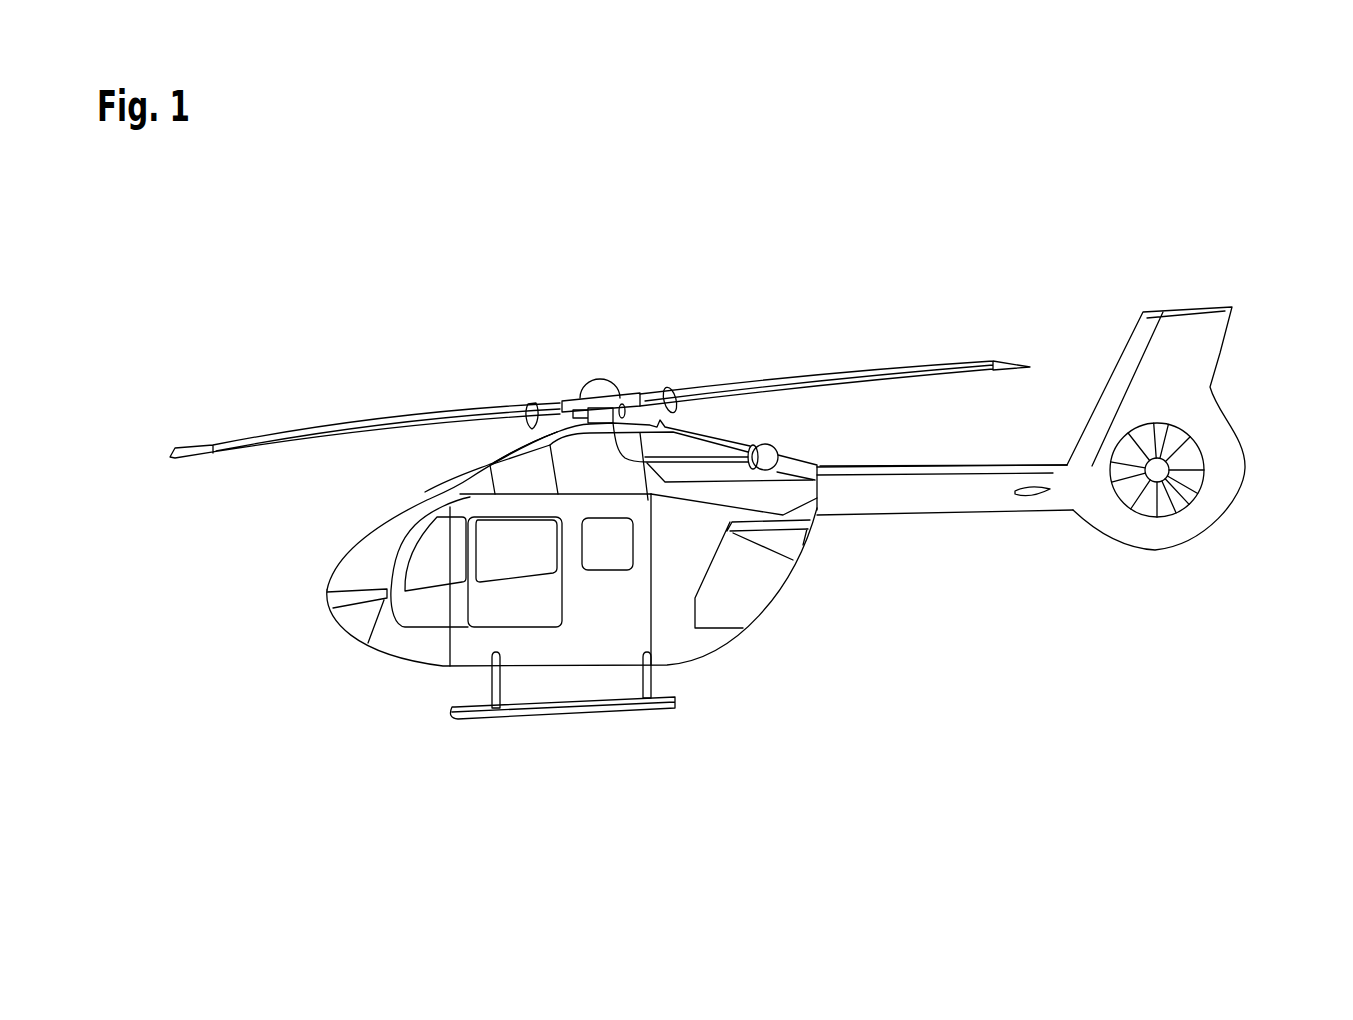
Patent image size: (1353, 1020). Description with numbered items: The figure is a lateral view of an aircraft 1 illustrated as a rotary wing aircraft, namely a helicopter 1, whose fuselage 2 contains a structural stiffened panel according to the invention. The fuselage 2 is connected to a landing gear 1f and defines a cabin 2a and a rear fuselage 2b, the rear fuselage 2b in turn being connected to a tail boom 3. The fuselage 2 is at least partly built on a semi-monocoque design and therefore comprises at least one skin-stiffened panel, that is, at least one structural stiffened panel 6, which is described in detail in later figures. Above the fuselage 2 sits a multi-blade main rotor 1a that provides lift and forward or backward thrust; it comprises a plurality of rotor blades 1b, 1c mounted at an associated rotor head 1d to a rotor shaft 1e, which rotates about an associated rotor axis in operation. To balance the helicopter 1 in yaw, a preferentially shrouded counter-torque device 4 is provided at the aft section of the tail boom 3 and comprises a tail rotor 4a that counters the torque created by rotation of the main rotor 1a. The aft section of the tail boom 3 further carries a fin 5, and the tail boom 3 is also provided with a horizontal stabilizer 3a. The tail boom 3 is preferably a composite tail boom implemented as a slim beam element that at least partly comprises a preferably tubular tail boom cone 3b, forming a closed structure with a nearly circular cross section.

The aircraft 1 is at (468, 282).
The multi-blade main rotor 1a is at (395, 405).
The rotor blade 1b is at (190, 448).
The rotor blade 1c is at (1007, 363).
The rotor head 1d is at (627, 366).
The rotor shaft 1e is at (493, 463).
The landing gear 1f is at (563, 712).
The fuselage 2 is at (670, 618).
The cabin 2a is at (425, 572).
The rear fuselage 2b is at (820, 540).
The tail boom 3 is at (953, 490).
The horizontal stabilizer 3a is at (1028, 498).
The tail boom cone 3b is at (864, 458).
The counter-torque device 4 is at (1218, 435).
The tail rotor 4a is at (1153, 502).
The fin 5 is at (1190, 330).
The structural stiffened panel 6 is at (613, 622).